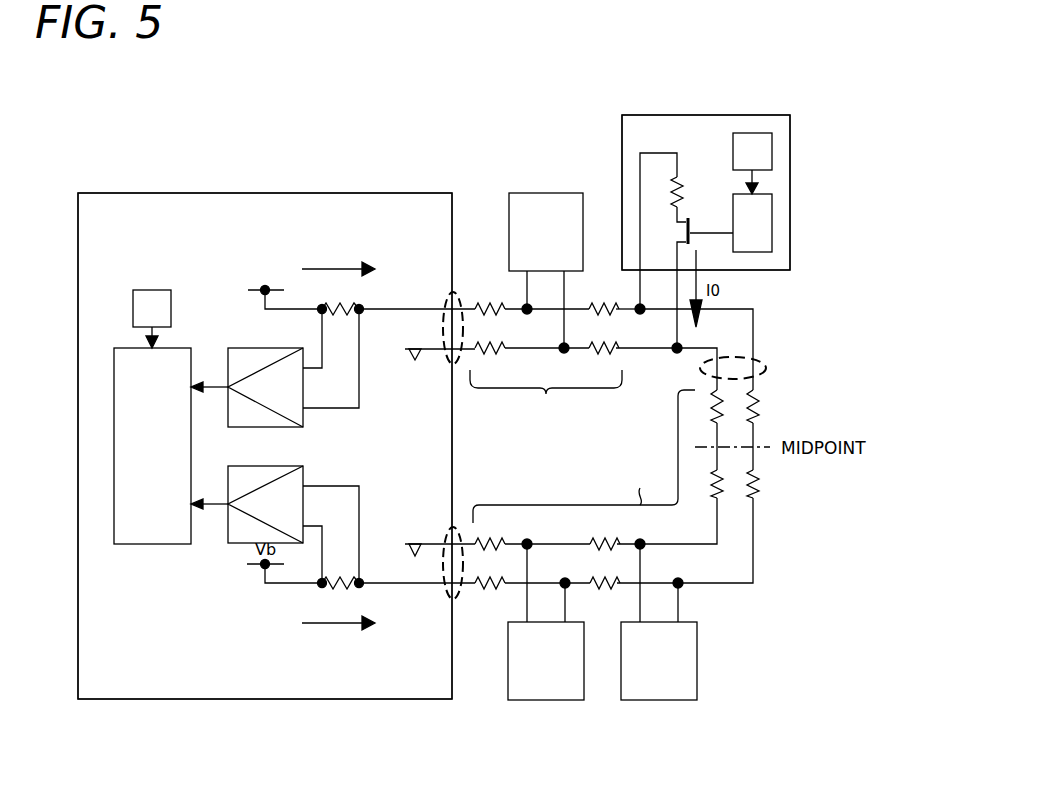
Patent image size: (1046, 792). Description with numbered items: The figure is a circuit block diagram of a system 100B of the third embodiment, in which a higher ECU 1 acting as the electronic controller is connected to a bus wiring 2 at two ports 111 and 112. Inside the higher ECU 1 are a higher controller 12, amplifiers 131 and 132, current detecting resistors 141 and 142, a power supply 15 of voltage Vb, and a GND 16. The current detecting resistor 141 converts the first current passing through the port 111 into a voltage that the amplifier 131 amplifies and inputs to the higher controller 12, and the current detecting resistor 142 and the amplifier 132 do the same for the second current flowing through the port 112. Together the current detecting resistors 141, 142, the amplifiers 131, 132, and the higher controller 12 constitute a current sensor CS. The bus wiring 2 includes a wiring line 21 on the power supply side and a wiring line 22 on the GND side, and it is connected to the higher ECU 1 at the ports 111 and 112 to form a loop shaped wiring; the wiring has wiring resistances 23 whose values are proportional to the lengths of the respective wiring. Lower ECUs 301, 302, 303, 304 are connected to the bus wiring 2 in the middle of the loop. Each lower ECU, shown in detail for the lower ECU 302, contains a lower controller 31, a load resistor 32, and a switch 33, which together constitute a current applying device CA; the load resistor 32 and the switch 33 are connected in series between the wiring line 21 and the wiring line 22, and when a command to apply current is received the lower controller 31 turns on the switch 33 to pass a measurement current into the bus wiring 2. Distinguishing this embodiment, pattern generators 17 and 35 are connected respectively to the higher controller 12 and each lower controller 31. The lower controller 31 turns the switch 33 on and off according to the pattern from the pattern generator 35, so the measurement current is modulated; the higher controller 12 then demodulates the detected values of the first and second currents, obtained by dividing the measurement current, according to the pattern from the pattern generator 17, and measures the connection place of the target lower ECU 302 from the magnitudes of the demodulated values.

The higher ECU 1 is at (375, 193).
The current sensor CS is at (190, 225).
The bus wiring 2 is at (767, 370).
The higher controller 12 is at (168, 348).
The power supply 15 is at (248, 290).
The GND 16 is at (418, 365).
The pattern generator 17 is at (150, 290).
The wiring line 21 is at (742, 304).
The wiring line 22 is at (720, 343).
The wiring resistances 23 is at (718, 498).
The lower controller 31 is at (772, 215).
The load resistor 32 is at (680, 187).
The switch 33 is at (692, 222).
The pattern generator 35 is at (740, 133).
The system 100B is at (478, 158).
The port 111 is at (450, 293).
The port 112 is at (450, 528).
The amplifier 131 is at (245, 348).
The amplifier 132 is at (245, 466).
The current detecting resistor 141 is at (350, 309).
The current detecting resistor 142 is at (355, 583).
The lower ECU 301 is at (535, 193).
The lower ECU 302 is at (790, 155).
The current applying device CA is at (720, 130).
The lower ECU 303 is at (665, 700).
The lower ECU 304 is at (552, 700).